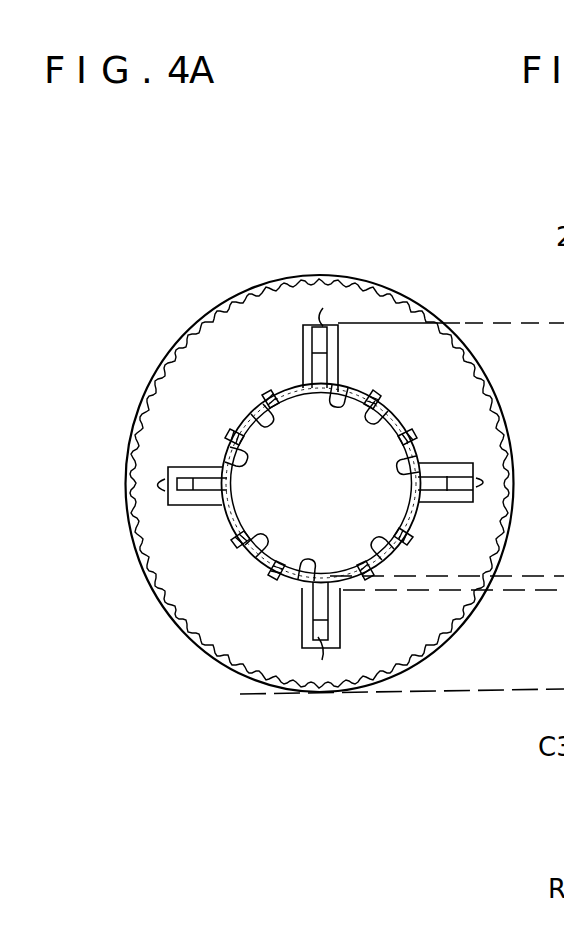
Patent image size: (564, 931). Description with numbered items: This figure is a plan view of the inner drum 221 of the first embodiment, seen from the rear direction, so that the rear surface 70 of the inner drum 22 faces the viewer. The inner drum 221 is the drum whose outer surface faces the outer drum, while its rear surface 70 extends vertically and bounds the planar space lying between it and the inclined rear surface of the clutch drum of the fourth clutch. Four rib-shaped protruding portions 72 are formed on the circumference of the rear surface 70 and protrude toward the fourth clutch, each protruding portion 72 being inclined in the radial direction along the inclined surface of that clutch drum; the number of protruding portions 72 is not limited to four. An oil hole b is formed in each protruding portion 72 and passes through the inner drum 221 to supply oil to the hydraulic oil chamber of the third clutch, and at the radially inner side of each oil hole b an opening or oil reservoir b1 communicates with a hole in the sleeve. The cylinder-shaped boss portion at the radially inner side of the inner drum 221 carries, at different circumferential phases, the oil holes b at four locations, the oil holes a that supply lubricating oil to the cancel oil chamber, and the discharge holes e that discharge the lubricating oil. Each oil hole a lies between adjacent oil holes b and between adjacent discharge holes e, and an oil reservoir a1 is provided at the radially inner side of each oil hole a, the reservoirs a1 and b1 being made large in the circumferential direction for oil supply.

The inner drum 221 is at (188, 168).
The rear surface of the inner drum 70 is at (263, 318).
The inner drum 22 is at (413, 510).
The protruding portions 72 is at (303, 325).
The oil holes b is at (323, 312).
The oil reservoir b1 is at (270, 733).
The oil holes a is at (400, 428).
The oil reservoir a1 is at (160, 643).
The discharge holes e is at (372, 390).